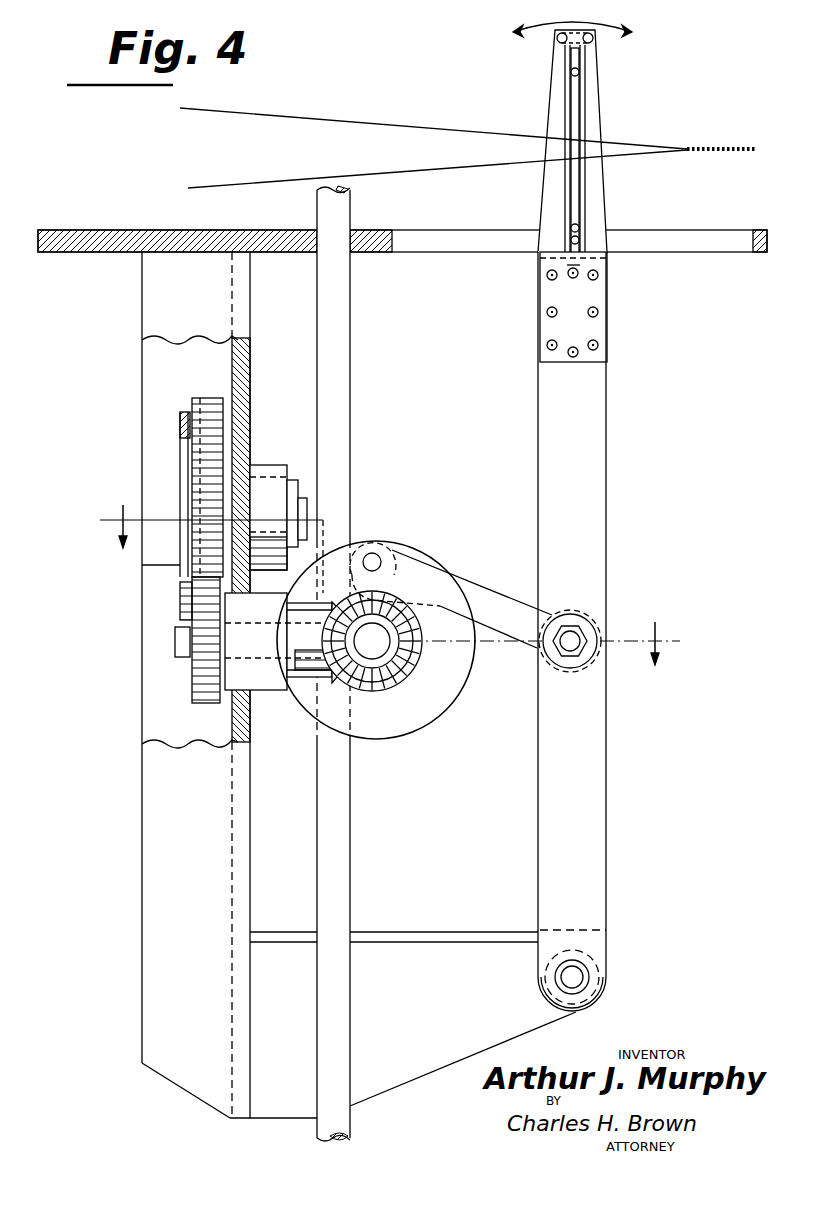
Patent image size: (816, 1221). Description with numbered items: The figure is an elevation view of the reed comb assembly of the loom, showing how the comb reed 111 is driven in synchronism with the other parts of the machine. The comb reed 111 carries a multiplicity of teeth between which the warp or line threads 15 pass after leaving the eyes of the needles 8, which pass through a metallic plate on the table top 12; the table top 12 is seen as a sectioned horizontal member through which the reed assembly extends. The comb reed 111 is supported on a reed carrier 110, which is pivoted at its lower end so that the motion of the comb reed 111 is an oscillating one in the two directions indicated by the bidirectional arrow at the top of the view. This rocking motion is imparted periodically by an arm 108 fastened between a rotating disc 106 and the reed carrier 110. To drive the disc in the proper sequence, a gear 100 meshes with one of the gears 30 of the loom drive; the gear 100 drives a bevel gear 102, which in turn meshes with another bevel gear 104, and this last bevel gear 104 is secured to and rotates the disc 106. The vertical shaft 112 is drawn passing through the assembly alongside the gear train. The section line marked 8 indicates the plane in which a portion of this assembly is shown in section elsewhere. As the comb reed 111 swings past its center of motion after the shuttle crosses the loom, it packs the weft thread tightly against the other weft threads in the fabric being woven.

The needles 8 is at (386, 581).
The table top 12 is at (162, 230).
The warp threads 15 is at (380, 123).
The gears 30 is at (210, 397).
The gear 100 is at (192, 698).
The bevel gear 102 is at (338, 679).
The bevel gear 104 is at (394, 678).
The rotating disc 106 is at (410, 738).
The arm 108 is at (490, 601).
The reed carrier 110 is at (593, 705).
The comb reed 111 is at (590, 102).
The vertical shaft 112 is at (348, 893).